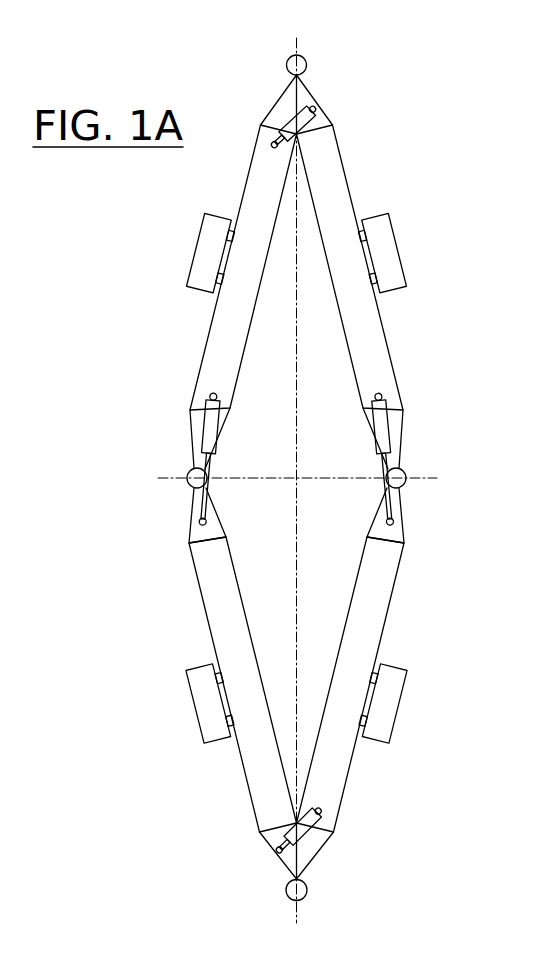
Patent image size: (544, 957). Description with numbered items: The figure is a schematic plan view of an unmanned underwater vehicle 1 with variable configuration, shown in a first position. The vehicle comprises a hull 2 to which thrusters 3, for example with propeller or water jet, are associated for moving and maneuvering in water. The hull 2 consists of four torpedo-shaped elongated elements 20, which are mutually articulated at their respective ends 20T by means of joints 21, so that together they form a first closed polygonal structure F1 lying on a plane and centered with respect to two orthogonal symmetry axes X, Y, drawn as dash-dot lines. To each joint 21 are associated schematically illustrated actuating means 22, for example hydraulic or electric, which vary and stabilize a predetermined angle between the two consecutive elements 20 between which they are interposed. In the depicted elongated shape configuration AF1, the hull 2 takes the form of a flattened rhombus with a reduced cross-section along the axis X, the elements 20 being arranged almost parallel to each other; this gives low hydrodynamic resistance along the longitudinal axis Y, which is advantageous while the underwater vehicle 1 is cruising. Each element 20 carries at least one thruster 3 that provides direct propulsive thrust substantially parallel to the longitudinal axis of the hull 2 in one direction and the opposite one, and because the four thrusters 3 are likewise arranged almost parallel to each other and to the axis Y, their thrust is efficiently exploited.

The underwater vehicle 1 is at (462, 162).
The hull 2 is at (128, 390).
The thruster 3 is at (205, 258).
The elongated element 20 is at (215, 350).
The end 20T is at (283, 97).
The joint 21 is at (306, 61).
The actuating means 22 is at (318, 129).
The symmetry axis X is at (317, 481).
The longitudinal axis Y is at (298, 450).
The elongated shape configuration AF1 is at (128, 543).
The first closed polygonal structure F1 is at (404, 798).